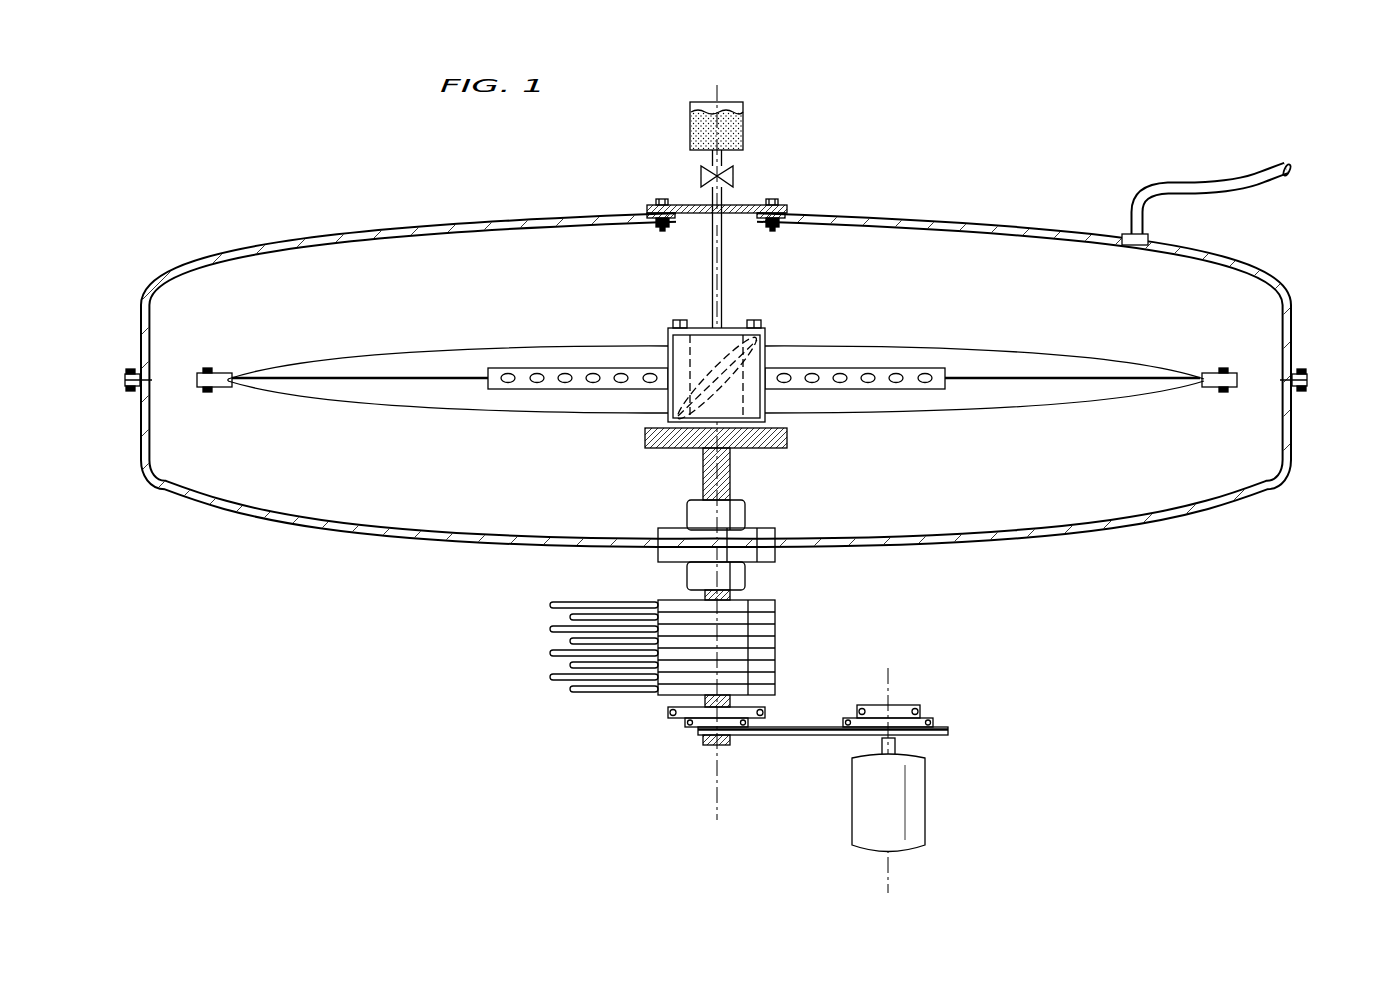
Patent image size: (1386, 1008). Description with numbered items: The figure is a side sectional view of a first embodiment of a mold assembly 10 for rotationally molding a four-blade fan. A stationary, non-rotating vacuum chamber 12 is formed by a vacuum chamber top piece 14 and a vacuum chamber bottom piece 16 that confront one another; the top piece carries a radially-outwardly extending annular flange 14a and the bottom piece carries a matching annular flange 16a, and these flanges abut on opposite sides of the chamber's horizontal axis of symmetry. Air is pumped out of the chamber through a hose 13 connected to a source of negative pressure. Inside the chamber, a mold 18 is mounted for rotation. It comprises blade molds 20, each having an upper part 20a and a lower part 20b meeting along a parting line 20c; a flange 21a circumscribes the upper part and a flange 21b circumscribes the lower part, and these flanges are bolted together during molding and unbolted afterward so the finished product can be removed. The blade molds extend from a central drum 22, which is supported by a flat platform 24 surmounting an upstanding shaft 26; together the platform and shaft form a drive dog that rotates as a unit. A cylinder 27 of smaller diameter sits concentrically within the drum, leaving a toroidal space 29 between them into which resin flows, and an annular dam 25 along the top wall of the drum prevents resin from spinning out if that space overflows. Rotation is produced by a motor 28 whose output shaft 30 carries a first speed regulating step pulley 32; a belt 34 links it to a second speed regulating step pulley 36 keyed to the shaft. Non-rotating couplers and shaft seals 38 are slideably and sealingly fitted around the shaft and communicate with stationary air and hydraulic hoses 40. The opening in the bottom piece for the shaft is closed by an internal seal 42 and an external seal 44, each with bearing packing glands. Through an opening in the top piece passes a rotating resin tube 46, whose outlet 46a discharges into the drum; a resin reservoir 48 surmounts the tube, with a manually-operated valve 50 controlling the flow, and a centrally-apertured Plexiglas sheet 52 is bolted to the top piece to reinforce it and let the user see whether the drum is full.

The mold assembly 10 is at (1063, 205).
The vacuum chamber 12 is at (716, 377).
The hose 13 is at (1213, 185).
The vacuum chamber top piece 14 is at (716, 298).
The annular flange 14a is at (130, 369).
The vacuum chamber bottom piece 16 is at (716, 461).
The annular flange 16a is at (130, 392).
The mold 18 is at (717, 373).
The blade mold 20 is at (600, 347).
The upper part 20a is at (390, 355).
The lower part 20b is at (392, 407).
The parting line 20c is at (458, 351).
The flange 21a is at (214, 368).
The flange 21b is at (214, 392).
The central drum 22 is at (767, 345).
The flat platform 24 is at (648, 436).
The annular dam 25 is at (668, 324).
The shaft 26 is at (731, 468).
The cylinder 27 is at (750, 400).
The motor 28 is at (855, 810).
The toroidal space 29 is at (668, 356).
The output shaft 30 is at (895, 745).
The first speed regulating step pulley 32 is at (905, 705).
The belt 34 is at (800, 735).
The second speed regulating step pulley 36 is at (768, 712).
The couplers and shaft seals 38 is at (790, 626).
The air and hydraulic hoses 40 is at (574, 598).
The internal seal 42 is at (763, 530).
The external seal 44 is at (766, 562).
The resin tube 46 is at (711, 243).
The feed tube outlet 46a is at (705, 323).
The resin reservoir 48 is at (690, 128).
The manually-operated valve 50 is at (700, 176).
The sheet of centrally-apertured Plexiglas 52 is at (753, 205).